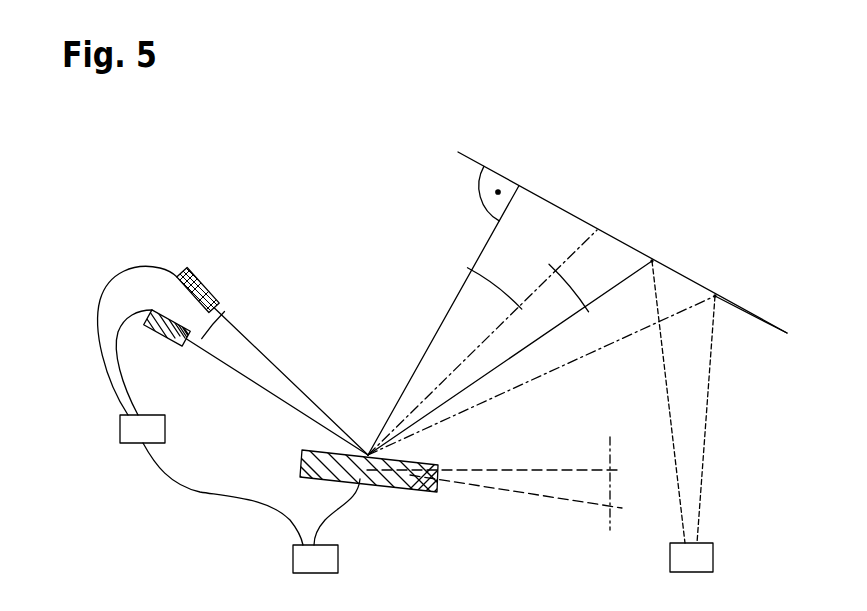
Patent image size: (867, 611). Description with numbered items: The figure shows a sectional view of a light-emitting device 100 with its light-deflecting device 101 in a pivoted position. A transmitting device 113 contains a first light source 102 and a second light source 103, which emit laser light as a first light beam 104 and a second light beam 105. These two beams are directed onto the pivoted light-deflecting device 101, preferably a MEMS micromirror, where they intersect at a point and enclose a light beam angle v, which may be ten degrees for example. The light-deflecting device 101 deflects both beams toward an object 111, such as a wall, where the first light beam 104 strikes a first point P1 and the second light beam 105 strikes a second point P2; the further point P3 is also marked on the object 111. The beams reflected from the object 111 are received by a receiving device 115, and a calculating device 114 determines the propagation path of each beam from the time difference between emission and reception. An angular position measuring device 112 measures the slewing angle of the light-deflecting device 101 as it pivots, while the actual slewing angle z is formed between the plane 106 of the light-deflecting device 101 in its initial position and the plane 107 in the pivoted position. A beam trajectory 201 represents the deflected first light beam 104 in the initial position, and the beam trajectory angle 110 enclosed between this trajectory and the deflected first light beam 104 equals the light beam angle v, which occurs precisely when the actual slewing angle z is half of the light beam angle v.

The light-emitting device 100 is at (556, 153).
The light-deflecting device 101 is at (410, 492).
The first light source 102 is at (203, 284).
The second light source 103 is at (169, 275).
The first light beam 104 is at (282, 372).
The second light beam 105 is at (256, 384).
The plane of the light-deflecting device in the initial position 106 is at (540, 470).
The plane of the light-deflecting device in the pivoted position 107 is at (540, 495).
The beam trajectory angle 110 is at (583, 283).
The object 111 is at (748, 312).
The angular position measuring device 112 is at (293, 556).
The transmitting device 113 is at (177, 277).
The calculating device 114 is at (120, 428).
The receiving device 115 is at (713, 560).
The beam trajectory 201 is at (466, 270).
The first point P1 is at (597, 229).
The second point P2 is at (657, 243).
The measuring point P3 is at (726, 285).
The light beam angle v is at (236, 335).
The actual slewing angle z is at (613, 484).